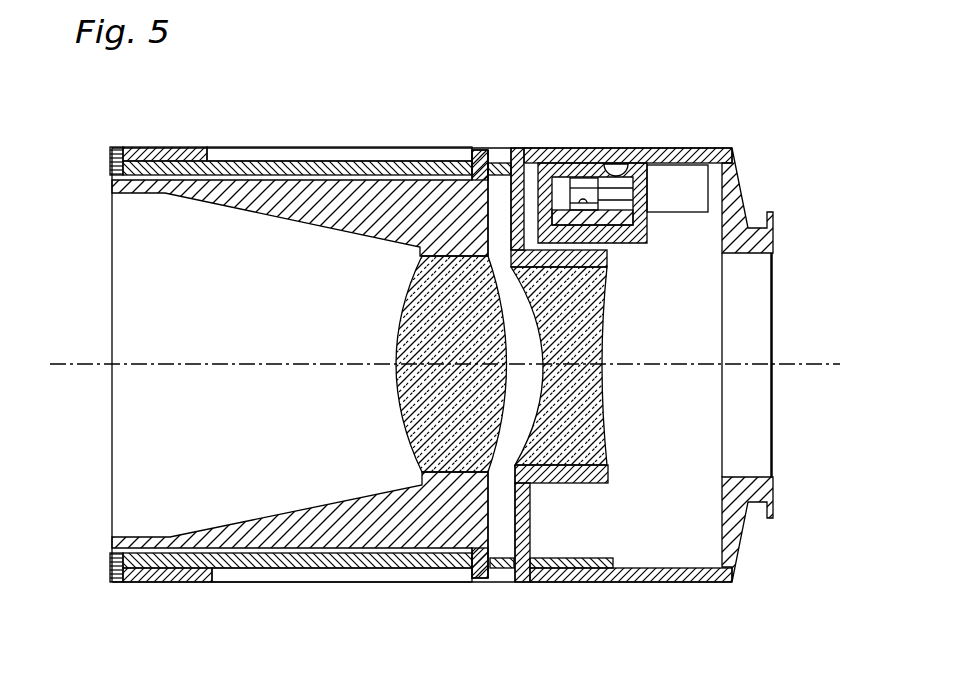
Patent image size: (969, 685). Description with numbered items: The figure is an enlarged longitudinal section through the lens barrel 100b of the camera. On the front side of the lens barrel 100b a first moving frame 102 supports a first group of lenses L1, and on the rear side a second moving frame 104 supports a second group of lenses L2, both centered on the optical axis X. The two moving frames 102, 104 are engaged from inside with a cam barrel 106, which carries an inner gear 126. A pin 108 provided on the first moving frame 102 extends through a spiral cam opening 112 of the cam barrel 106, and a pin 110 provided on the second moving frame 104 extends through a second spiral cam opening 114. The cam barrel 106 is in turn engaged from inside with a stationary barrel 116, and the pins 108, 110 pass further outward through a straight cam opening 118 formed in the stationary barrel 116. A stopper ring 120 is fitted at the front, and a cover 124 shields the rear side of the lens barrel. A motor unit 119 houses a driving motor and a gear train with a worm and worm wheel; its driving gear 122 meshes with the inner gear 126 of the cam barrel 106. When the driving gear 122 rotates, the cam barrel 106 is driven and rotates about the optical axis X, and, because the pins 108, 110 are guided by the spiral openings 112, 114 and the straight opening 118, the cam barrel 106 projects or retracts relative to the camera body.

The lens barrel 100b is at (418, 140).
The first moving frame 102 is at (300, 190).
The second moving frame 104 is at (565, 484).
The cam barrel 106 is at (367, 168).
The pin 108 is at (500, 168).
The pin 110 is at (519, 165).
The spiral cam opening 112 is at (478, 158).
The spiral cam opening 114 is at (610, 170).
The stationary barrel 116 is at (683, 576).
The straight cam opening 118 is at (237, 156).
The motor unit 119 is at (690, 188).
The stopper ring 120 is at (110, 160).
The driving gear 122 is at (603, 222).
The cover 124 is at (738, 205).
The inner gear 126 is at (638, 170).
The first lens group L1 is at (397, 340).
The second lens group L2 is at (600, 346).
The optical axis X is at (72, 362).